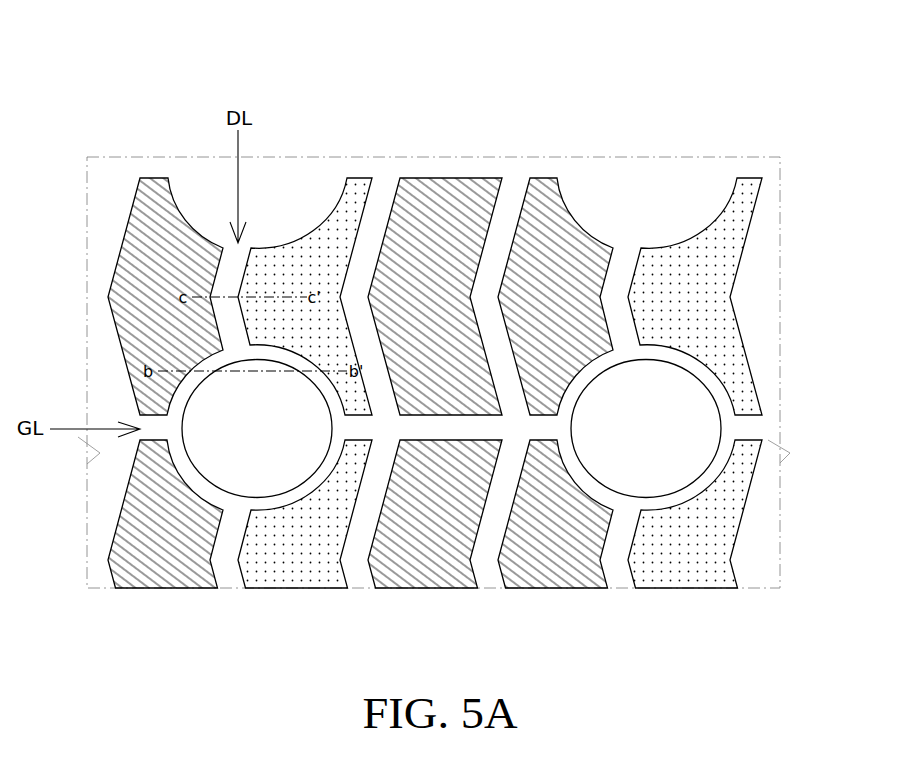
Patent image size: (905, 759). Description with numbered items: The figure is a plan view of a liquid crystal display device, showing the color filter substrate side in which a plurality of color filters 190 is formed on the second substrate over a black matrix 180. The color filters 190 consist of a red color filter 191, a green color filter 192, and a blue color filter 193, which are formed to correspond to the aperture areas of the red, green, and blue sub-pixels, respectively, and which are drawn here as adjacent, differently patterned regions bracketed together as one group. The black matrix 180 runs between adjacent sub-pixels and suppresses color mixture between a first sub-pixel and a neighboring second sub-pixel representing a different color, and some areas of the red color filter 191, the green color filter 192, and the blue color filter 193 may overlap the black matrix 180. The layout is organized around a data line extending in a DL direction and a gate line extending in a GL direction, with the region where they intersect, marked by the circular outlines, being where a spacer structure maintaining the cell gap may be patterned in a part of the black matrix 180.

The black matrix 180 is at (738, 483).
The color filters 190 is at (575, 85).
The red color filter 191 is at (315, 255).
The green color filter 192 is at (447, 200).
The blue color filter 193 is at (575, 253).